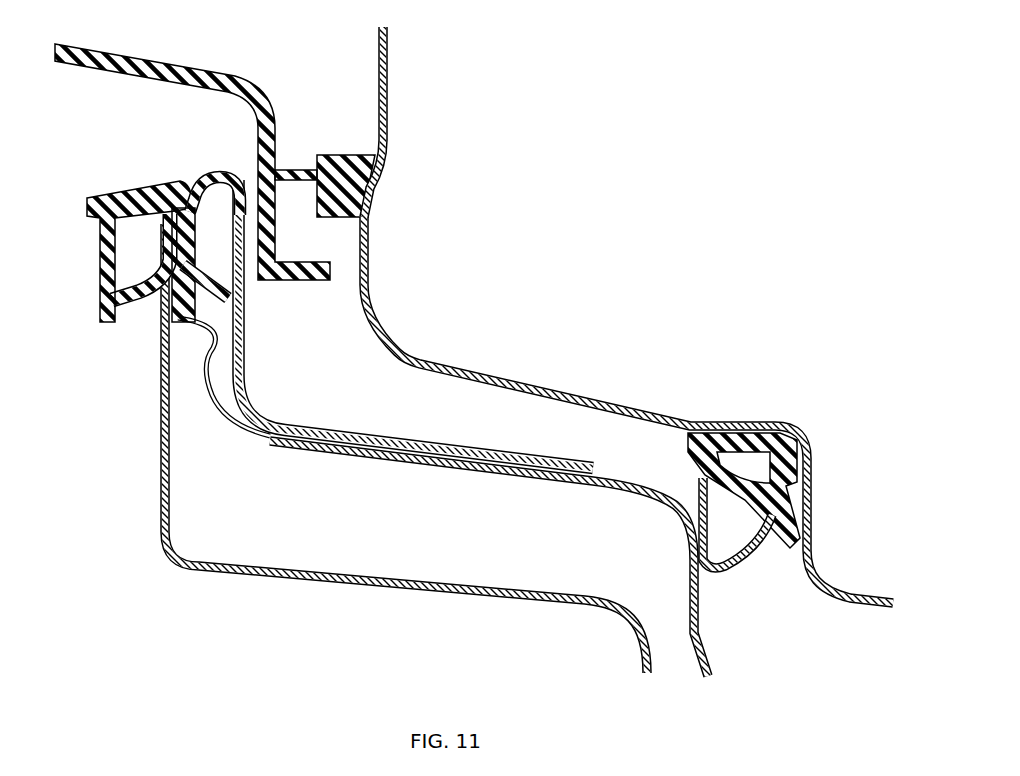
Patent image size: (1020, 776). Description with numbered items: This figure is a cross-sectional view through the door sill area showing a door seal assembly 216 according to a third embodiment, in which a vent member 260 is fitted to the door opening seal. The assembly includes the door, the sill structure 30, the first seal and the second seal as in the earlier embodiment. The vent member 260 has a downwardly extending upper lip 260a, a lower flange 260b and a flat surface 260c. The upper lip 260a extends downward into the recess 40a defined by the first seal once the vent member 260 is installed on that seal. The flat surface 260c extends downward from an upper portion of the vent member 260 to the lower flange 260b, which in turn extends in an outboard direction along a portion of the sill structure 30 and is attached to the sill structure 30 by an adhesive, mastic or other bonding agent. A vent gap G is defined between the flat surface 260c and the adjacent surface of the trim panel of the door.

The door seal assembly 216 is at (528, 133).
The vent member 260 is at (246, 334).
The flat surface 260c is at (246, 297).
The sill structure 30 is at (619, 483).
The lower flange 260b is at (497, 453).
The upper lip 260a is at (134, 188).
The trim clip 40a is at (228, 256).
The vent gap G is at (259, 200).